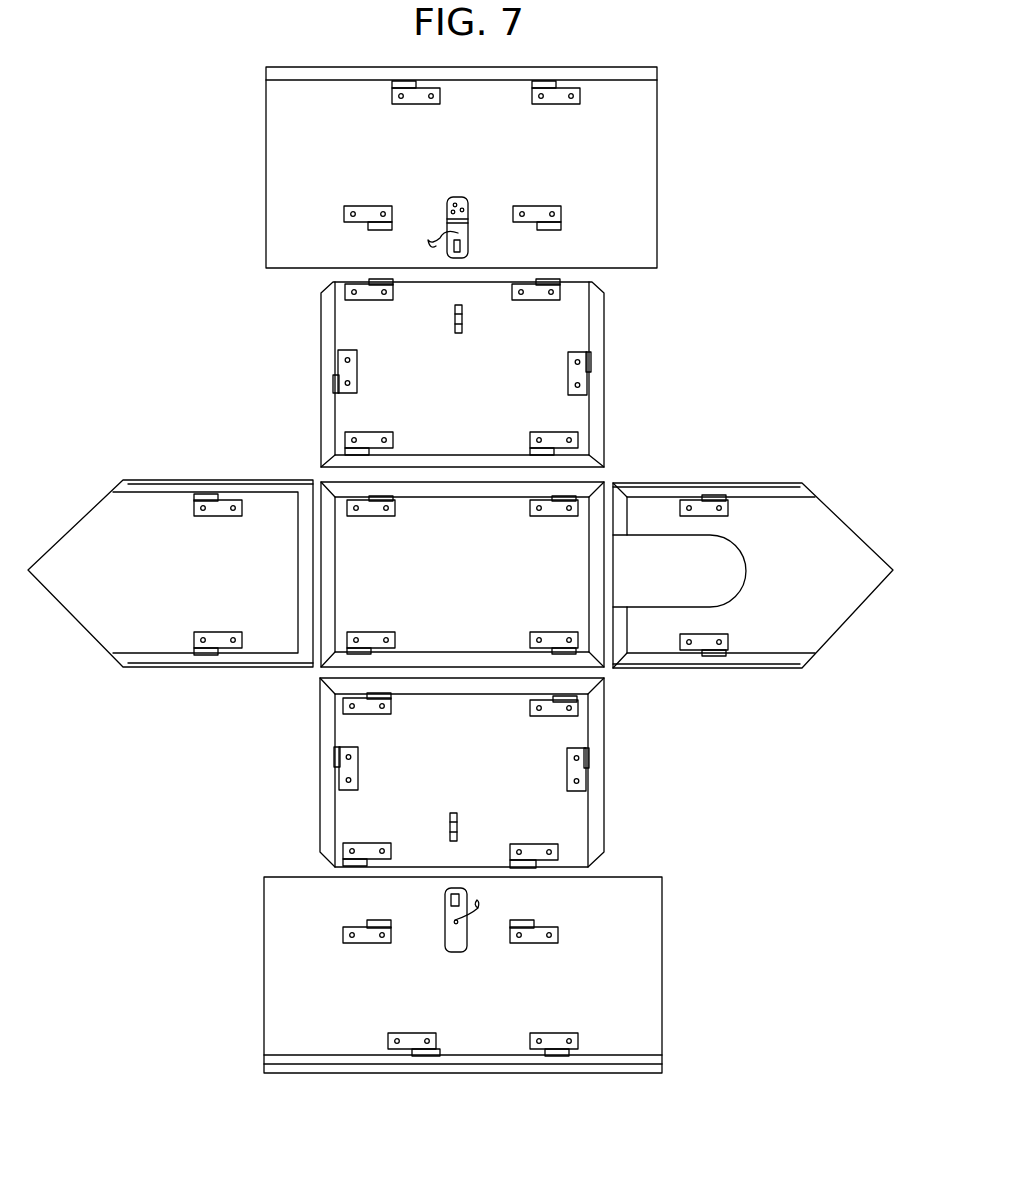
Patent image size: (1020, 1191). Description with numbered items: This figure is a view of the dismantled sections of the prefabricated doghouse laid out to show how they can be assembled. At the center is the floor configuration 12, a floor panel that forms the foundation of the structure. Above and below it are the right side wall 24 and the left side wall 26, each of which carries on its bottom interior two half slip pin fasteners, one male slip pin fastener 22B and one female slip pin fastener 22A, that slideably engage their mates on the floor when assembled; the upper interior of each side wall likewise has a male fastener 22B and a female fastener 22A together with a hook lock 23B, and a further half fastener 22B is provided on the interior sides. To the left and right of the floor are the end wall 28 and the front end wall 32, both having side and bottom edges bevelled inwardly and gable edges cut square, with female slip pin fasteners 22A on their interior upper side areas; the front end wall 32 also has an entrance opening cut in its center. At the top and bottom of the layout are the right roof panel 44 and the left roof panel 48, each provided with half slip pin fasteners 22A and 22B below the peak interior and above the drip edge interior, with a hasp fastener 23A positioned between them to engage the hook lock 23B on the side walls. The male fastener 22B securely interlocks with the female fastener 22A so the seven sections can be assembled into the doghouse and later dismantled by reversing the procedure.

The floor configuration 12 is at (486, 667).
The right side wall 24 is at (321, 352).
The left side wall 26 is at (320, 797).
The end wall 28 is at (100, 497).
The front end wall 32 is at (835, 635).
The right roof panel 44 is at (660, 166).
The left roof panel 48 is at (264, 985).
The female slip pin fastener 22A is at (548, 103).
The male slip pin fastener 22B is at (410, 103).
The hasp fastener 23A is at (460, 200).
The hook lock 23B is at (462, 330).